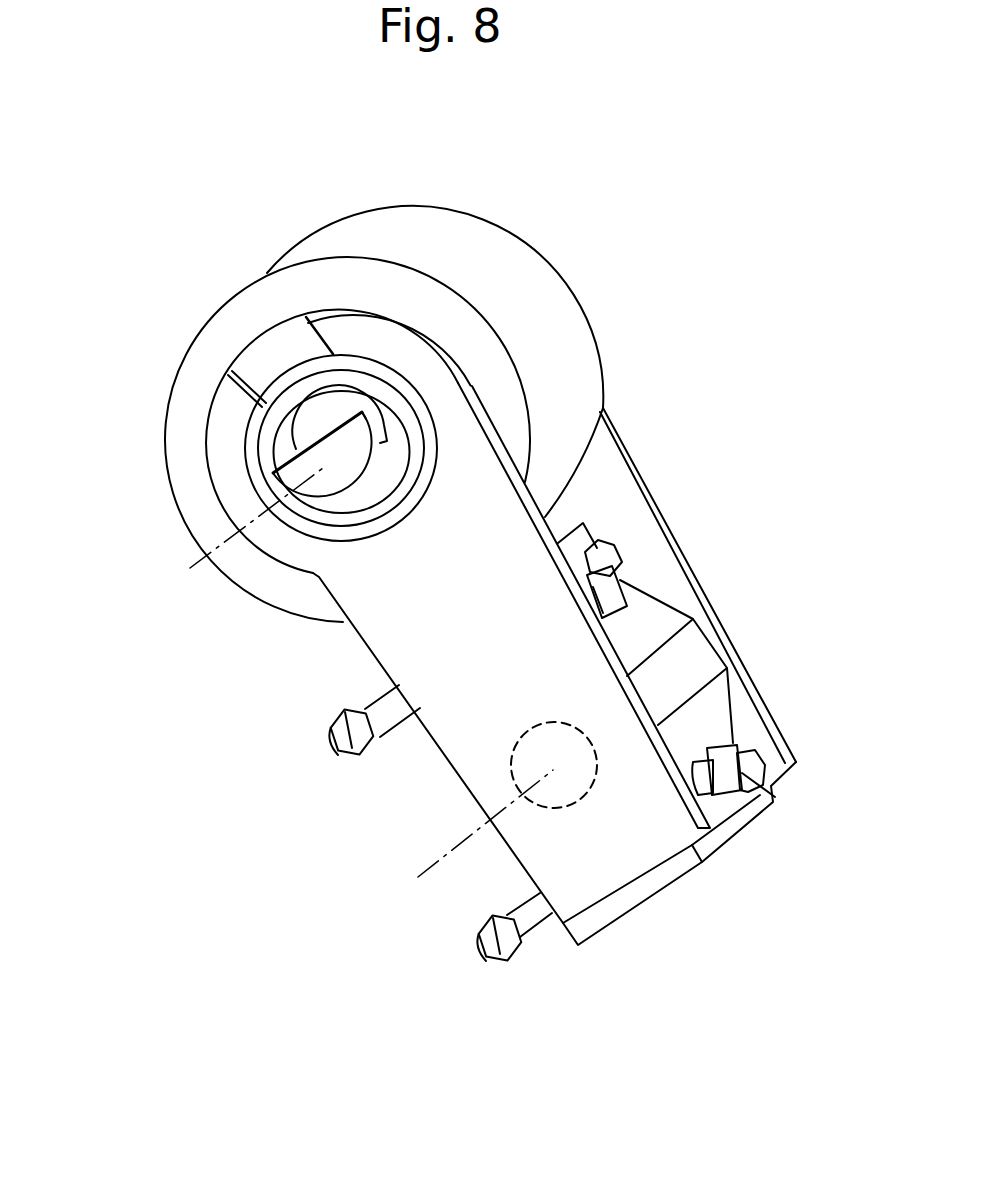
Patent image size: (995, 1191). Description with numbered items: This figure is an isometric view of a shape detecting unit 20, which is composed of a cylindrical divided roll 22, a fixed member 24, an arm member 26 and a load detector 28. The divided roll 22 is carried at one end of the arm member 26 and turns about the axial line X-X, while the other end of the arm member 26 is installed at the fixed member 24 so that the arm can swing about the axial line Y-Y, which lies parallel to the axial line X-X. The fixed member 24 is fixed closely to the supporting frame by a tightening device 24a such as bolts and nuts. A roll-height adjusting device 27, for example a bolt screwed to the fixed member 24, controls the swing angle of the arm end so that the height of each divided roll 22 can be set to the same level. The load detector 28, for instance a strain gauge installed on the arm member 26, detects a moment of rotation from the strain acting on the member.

The shape detecting unit 20 is at (172, 294).
The cylindrical divided roll 22 is at (551, 286).
The fixed member 24 is at (697, 655).
The tightening device 24a is at (380, 707).
The arm member 26 is at (660, 472).
The roll-height adjusting device 27 is at (620, 580).
The load detector 28 is at (513, 773).